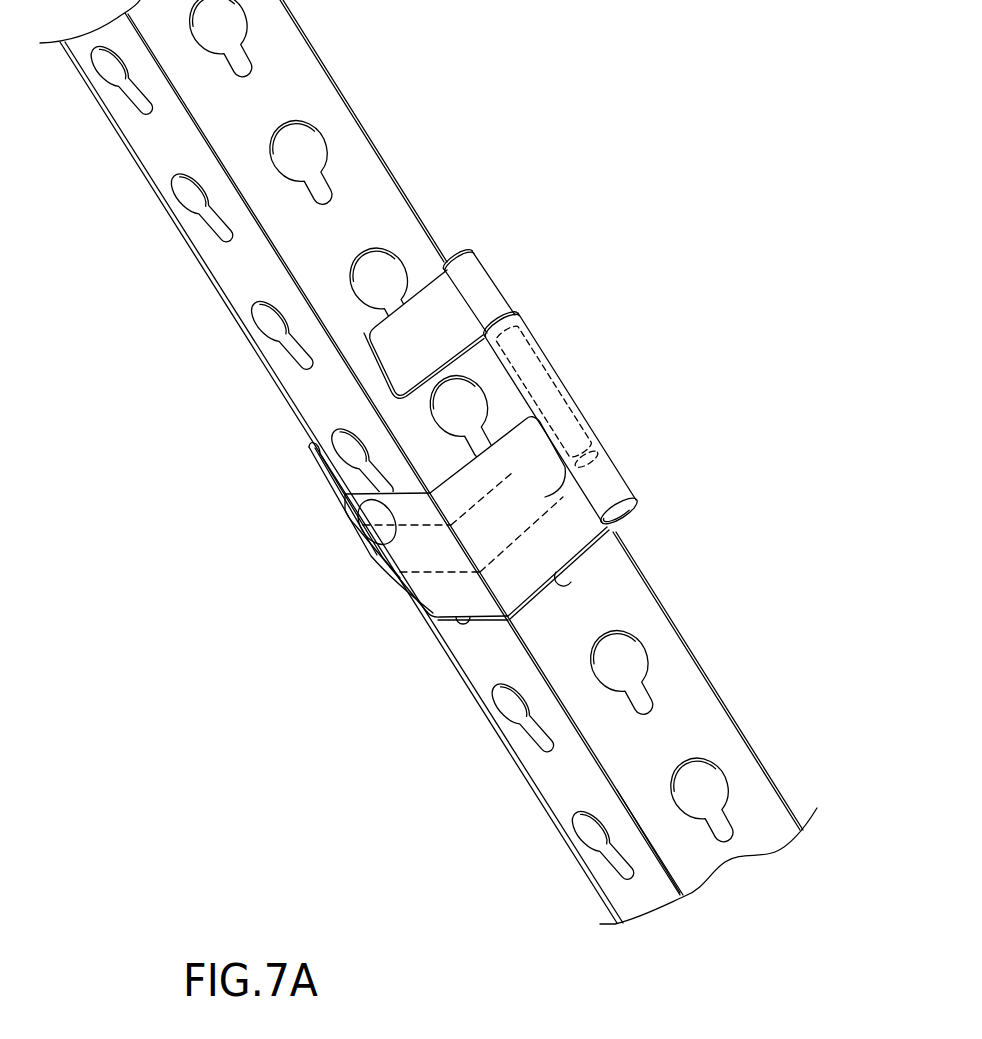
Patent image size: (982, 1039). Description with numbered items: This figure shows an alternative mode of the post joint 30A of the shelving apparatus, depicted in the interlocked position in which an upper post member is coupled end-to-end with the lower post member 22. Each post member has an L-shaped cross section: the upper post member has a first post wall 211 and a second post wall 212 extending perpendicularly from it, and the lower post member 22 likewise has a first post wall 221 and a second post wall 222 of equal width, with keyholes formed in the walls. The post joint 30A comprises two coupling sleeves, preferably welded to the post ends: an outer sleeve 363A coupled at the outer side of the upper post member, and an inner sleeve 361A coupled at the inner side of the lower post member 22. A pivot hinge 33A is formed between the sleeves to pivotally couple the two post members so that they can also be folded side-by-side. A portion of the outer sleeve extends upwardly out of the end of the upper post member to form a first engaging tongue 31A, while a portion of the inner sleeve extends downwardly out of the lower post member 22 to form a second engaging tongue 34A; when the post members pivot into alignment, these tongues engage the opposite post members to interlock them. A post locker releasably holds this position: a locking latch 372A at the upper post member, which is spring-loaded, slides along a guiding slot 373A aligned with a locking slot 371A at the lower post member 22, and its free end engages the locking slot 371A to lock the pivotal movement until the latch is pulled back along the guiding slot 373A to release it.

The first post wall 211 is at (230, 265).
The second post wall 212 is at (362, 190).
The lower post member 22 is at (788, 642).
The first post wall 221 is at (557, 795).
The second post wall 222 is at (703, 733).
The post joint 30A is at (456, 367).
The first engaging tongue 31A is at (547, 487).
The pivot hinge 33A is at (365, 533).
The second engaging tongue 34A is at (556, 418).
The inner sleeve 361A is at (445, 597).
The outer sleeve 363A is at (320, 482).
The locking slot 371A is at (610, 490).
The locking latch 372A is at (640, 327).
The guiding slot 373A is at (518, 363).